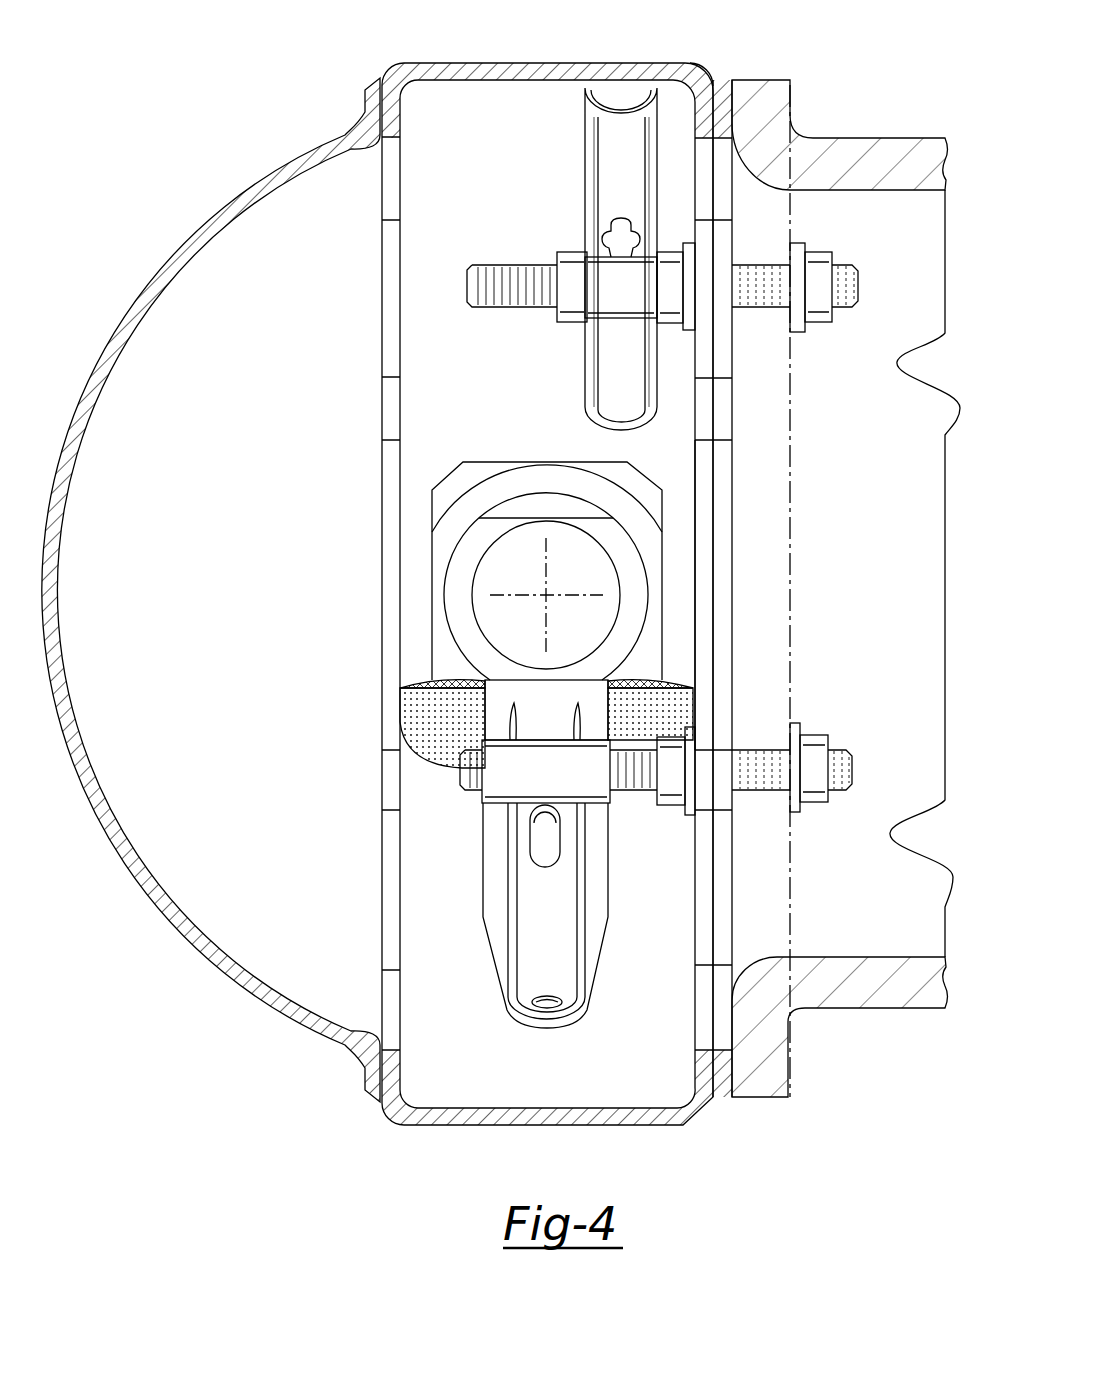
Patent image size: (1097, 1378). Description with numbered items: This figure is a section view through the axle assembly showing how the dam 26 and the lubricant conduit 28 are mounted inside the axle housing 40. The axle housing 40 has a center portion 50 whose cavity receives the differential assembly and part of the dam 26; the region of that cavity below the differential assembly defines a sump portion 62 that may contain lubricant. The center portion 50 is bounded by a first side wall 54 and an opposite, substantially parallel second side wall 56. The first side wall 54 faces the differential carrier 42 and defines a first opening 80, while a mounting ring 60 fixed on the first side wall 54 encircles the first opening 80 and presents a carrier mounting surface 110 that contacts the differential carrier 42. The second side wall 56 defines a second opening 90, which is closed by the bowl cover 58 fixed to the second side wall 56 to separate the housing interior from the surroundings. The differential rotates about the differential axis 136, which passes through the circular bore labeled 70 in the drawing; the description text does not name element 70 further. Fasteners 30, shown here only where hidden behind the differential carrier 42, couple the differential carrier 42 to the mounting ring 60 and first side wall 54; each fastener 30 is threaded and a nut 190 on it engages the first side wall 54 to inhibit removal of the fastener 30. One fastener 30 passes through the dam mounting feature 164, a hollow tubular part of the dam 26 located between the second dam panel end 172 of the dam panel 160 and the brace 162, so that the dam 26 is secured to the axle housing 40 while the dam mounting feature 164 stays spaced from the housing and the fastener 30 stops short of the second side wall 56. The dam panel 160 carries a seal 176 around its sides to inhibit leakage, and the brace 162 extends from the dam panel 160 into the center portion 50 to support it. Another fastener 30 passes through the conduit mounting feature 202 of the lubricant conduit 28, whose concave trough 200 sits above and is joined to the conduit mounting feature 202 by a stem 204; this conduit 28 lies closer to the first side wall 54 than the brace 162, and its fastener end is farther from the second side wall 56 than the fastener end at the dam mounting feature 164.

The dam 26 is at (559, 718).
The lubricant conduit 28 is at (612, 217).
The fastener 30 is at (526, 265).
The axle housing 40 is at (505, 564).
The differential carrier 42 is at (882, 138).
The center portion 50 is at (505, 564).
The first side wall 54 is at (713, 413).
The second side wall 56 is at (380, 413).
The bowl cover 58 is at (133, 306).
The mounting ring 60 is at (720, 72).
The sump portion 62 is at (619, 1075).
The bore 70 is at (525, 630).
The first opening 80 is at (700, 538).
The second opening 90 is at (388, 505).
The carrier mounting surface 110 is at (737, 80).
The differential axis 136 is at (546, 595).
The dam panel 160 is at (447, 682).
The brace 162 is at (562, 912).
The dam mounting feature 164 is at (560, 779).
The second dam panel end 172 is at (548, 1030).
The seal 176 is at (400, 686).
The nut 190 is at (570, 252).
The trough 200 is at (620, 110).
The conduit mounting feature 202 is at (636, 299).
The stem 204 is at (624, 238).